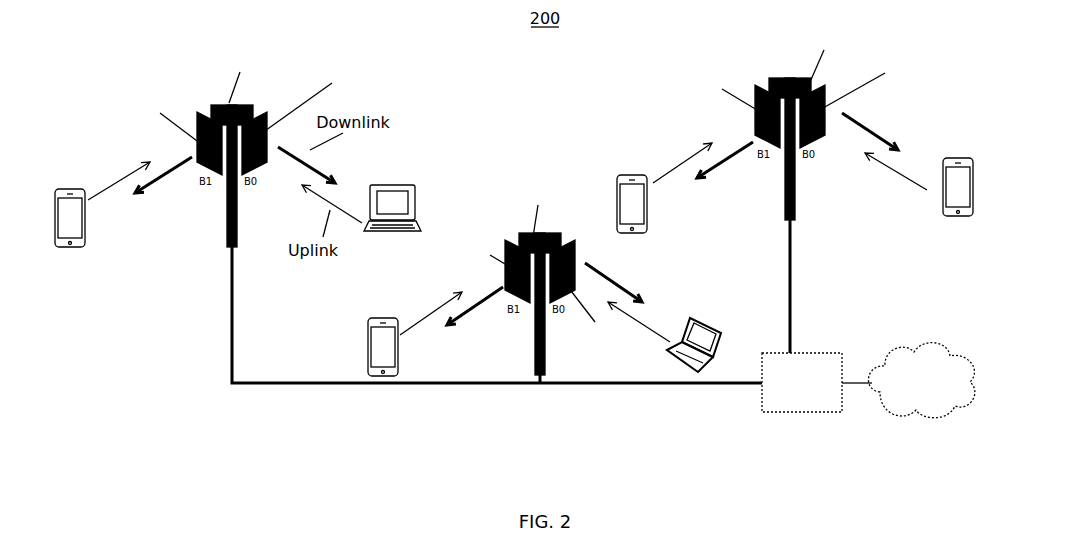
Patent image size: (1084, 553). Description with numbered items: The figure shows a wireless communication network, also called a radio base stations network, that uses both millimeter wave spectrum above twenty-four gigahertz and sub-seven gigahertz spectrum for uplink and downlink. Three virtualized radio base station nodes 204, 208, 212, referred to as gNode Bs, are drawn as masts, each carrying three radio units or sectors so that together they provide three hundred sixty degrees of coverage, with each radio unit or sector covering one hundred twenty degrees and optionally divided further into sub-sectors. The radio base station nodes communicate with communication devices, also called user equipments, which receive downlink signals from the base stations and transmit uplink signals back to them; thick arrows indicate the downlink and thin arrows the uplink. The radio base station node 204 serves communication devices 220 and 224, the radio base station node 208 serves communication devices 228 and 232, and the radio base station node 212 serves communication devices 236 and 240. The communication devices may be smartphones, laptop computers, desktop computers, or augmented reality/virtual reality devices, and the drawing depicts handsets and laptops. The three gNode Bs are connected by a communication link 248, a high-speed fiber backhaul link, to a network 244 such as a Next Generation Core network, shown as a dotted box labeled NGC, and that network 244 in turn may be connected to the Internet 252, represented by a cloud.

The radio base station node 204 is at (227, 193).
The radio base station node 208 is at (533, 322).
The radio base station node 212 is at (798, 175).
The communication device 220 is at (85, 247).
The communication device 224 is at (405, 207).
The communication device 228 is at (370, 342).
The communication device 232 is at (697, 320).
The communication device 236 is at (622, 175).
The communication device 240 is at (948, 217).
The network 244 is at (803, 412).
The communication link 248 is at (307, 384).
The Internet 252 is at (913, 422).